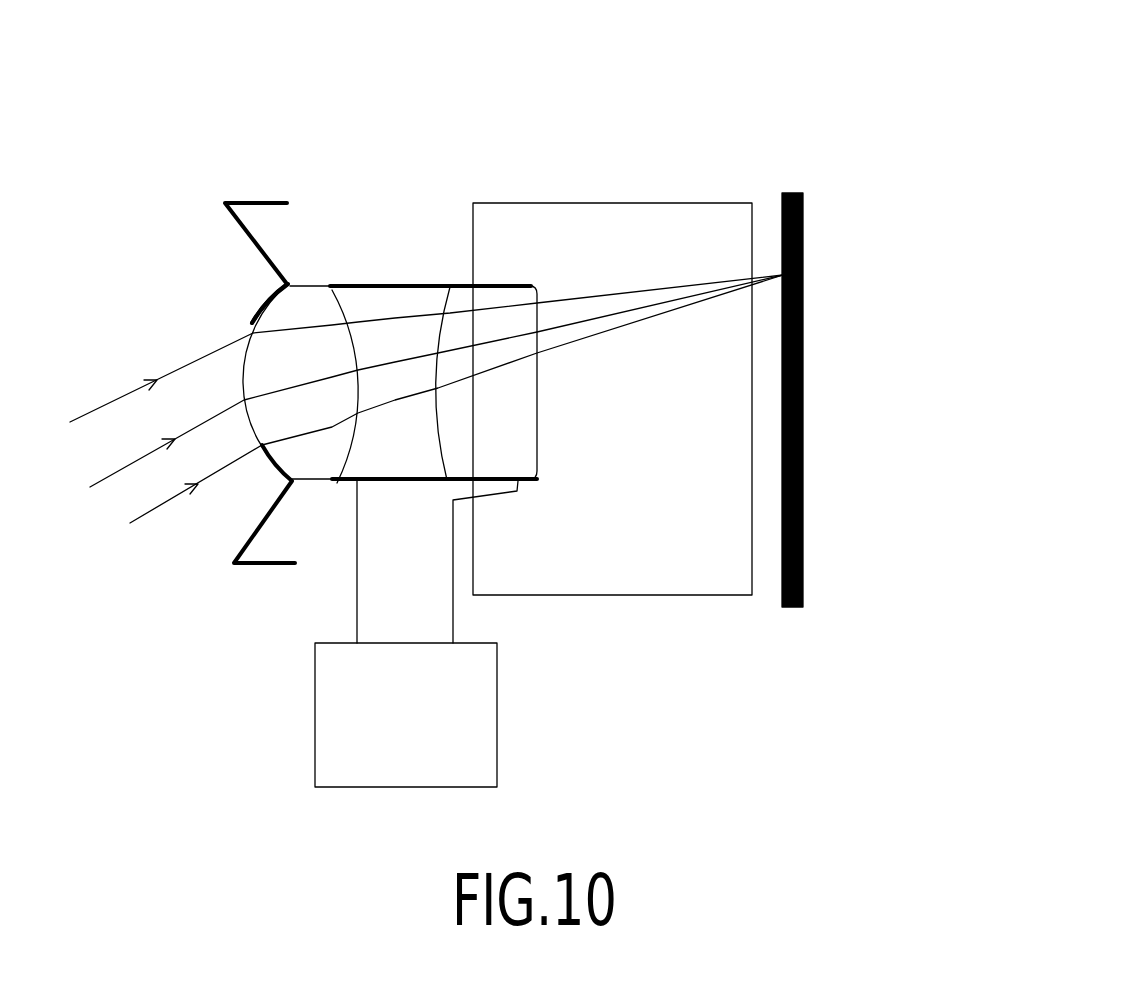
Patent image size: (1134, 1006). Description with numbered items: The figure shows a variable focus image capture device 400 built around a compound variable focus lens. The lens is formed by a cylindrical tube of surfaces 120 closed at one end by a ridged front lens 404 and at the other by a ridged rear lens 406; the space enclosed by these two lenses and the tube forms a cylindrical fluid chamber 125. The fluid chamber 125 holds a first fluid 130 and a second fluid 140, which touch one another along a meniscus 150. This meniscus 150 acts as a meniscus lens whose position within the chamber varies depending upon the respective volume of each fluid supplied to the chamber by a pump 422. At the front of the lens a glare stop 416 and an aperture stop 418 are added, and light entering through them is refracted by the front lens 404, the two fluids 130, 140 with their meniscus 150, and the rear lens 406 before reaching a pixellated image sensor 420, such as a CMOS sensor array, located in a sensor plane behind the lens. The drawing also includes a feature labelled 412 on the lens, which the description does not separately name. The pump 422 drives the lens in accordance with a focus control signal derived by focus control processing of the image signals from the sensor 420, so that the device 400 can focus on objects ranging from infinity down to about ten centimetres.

The variable focus image capture device 400 is at (520, 410).
The cylindrical tube of surfaces 120 is at (393, 280).
The cylindrical fluid chamber 125 is at (360, 308).
The first fluid 130 is at (477, 297).
The second fluid 140 is at (412, 300).
The meniscus 150 is at (438, 419).
The ridged front lens 404 is at (309, 293).
The ridged rear lens 406 is at (712, 245).
The rear lens surface 412 is at (518, 285).
The glare stop 416 is at (252, 193).
The aperture stop 418 is at (283, 289).
The pixellated image sensor 420 is at (808, 520).
The pump 422 is at (497, 717).